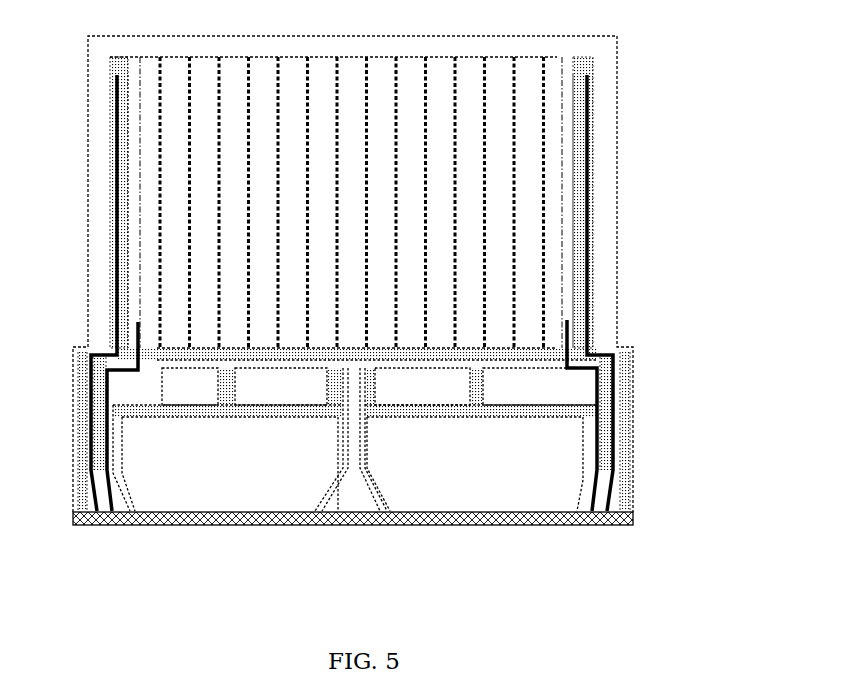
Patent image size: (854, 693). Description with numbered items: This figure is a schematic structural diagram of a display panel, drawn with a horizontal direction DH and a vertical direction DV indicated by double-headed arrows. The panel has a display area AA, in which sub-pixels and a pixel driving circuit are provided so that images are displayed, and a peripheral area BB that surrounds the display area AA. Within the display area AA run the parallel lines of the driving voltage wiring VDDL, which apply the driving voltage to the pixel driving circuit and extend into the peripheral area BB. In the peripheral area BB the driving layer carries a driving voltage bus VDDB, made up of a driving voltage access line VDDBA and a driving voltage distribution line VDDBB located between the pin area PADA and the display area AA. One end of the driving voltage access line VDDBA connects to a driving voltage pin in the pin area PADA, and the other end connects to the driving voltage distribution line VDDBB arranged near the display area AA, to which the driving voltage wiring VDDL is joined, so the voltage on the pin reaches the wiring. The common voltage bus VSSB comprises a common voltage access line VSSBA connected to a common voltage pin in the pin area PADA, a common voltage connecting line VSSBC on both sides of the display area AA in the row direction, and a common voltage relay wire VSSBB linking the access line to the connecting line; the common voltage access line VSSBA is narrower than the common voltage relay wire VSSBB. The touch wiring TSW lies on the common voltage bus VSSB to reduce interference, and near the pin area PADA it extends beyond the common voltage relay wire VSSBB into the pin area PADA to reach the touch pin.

The horizontal direction DH is at (260, 20).
The vertical direction DV is at (37, 173).
The driving voltage wiring VDDL is at (458, 65).
The display area AA is at (557, 56).
The peripheral area BB is at (602, 75).
The driving voltage access line VDDBA is at (118, 455).
The driving voltage distribution line VDDBB is at (265, 360).
The driving voltage bus VDDB is at (691, 131).
The touch wiring TSW is at (591, 155).
The common voltage access line VSSBA is at (620, 483).
The common voltage relay wire VSSBB is at (625, 410).
The common voltage connecting line VSSBC is at (591, 305).
The common voltage bus VSSB is at (691, 247).
The pin area PADA is at (481, 512).